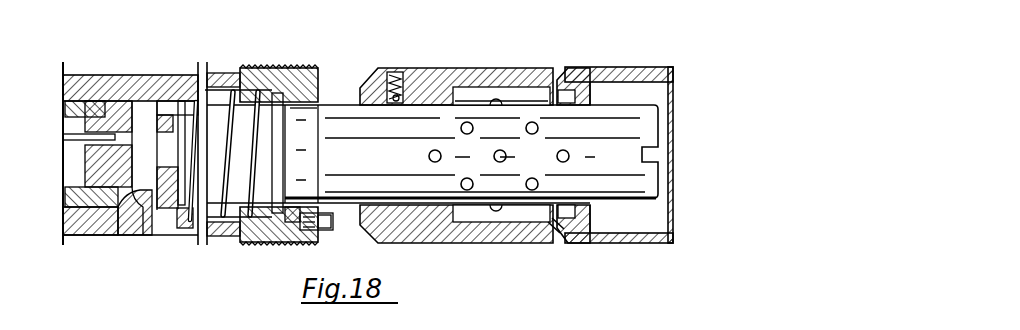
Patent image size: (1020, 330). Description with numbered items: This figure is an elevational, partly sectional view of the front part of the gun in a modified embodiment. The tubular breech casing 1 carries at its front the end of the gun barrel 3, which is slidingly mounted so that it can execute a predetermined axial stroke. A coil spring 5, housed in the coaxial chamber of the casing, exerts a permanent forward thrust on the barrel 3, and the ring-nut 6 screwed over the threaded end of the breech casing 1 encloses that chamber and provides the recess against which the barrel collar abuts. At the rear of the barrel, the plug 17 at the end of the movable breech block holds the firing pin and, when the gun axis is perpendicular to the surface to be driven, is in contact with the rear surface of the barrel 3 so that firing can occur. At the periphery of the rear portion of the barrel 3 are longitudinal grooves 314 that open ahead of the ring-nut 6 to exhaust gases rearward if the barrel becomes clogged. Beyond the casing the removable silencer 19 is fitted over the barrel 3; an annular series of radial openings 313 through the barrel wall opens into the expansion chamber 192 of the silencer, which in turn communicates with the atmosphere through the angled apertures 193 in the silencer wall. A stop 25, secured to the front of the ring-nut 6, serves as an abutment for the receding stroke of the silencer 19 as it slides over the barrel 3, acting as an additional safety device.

The tubular breech casing 1 is at (159, 101).
The gun barrel 3 is at (335, 125).
The longitudinal grooves 314 is at (167, 106).
The openings 313 is at (531, 191).
The coil spring 5 is at (250, 218).
The ring-nut 6 is at (293, 245).
The plug 17 is at (112, 234).
The silencer 19 is at (428, 92).
The chamber 192 is at (521, 103).
The apertures 193 is at (568, 79).
The stop 25 is at (322, 231).